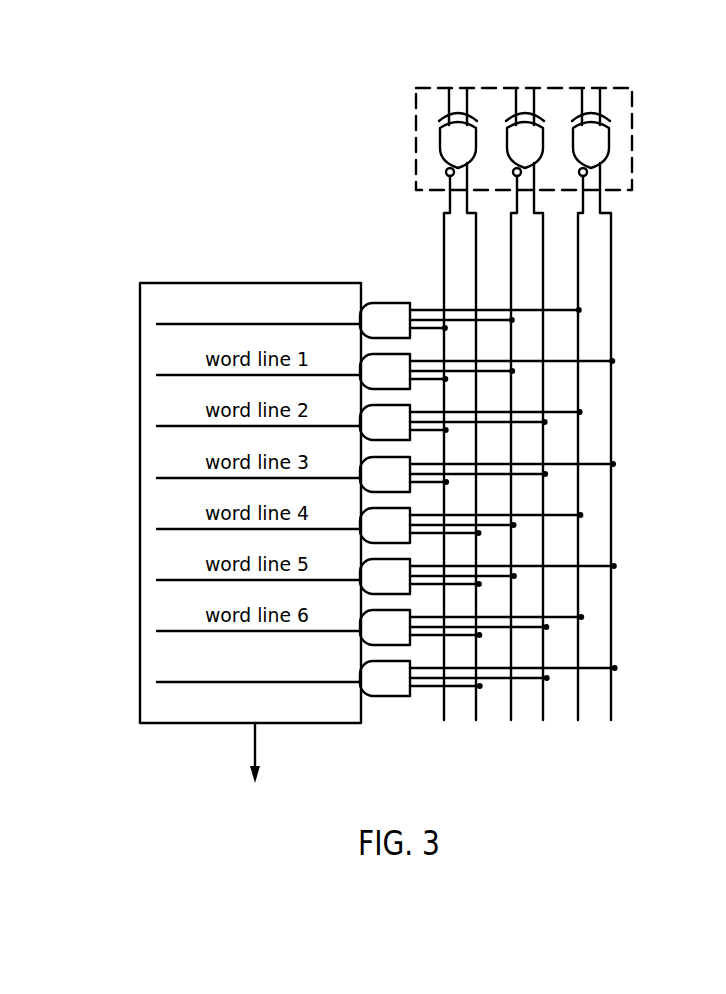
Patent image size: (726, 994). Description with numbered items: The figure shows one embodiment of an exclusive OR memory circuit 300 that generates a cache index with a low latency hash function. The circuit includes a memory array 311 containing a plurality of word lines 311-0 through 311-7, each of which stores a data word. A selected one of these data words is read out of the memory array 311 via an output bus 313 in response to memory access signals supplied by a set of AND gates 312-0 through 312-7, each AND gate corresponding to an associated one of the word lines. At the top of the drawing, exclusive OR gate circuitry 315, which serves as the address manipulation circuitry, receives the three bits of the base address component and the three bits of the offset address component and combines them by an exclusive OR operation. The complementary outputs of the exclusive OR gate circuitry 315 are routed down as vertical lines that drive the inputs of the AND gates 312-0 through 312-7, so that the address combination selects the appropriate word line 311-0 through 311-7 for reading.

The exclusive OR memory circuit 300 is at (646, 509).
The memory array 311 is at (140, 494).
The word line 311-0 is at (167, 309).
The word line 311-7 is at (167, 666).
The AND gate 312-0 is at (387, 300).
The AND gate 312-7 is at (383, 694).
The output bus 313 is at (263, 775).
The exclusive OR gate circuitry 315 is at (630, 112).